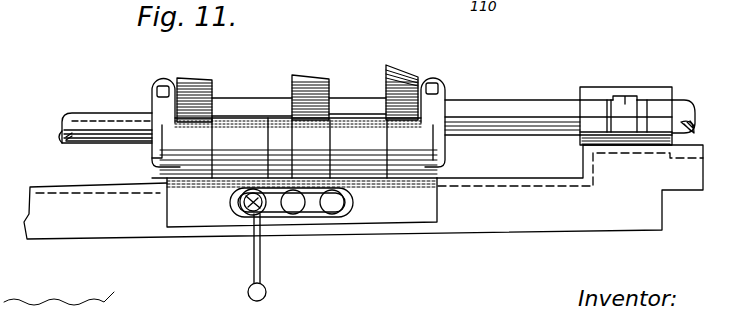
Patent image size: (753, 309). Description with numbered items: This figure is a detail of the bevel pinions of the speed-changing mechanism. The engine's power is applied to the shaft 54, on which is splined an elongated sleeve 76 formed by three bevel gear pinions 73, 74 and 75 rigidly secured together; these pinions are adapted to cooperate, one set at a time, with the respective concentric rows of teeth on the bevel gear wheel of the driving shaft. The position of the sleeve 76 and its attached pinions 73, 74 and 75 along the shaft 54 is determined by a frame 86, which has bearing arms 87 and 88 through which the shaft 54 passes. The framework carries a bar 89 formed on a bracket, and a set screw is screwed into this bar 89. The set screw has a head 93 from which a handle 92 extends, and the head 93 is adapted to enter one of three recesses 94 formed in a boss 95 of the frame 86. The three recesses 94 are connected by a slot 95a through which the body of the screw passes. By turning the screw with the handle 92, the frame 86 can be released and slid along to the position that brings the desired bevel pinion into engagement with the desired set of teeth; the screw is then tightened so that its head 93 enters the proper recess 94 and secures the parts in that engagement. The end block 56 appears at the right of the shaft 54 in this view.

The shaft 54 is at (91, 116).
The end block 56 is at (627, 96).
The bevel gear pinion 73 is at (193, 92).
The bevel gear pinion 74 is at (303, 74).
The bevel gear pinion 75 is at (408, 70).
The elongated sleeve 76 is at (340, 107).
The frame 86 is at (362, 133).
The bearing arm 87 is at (157, 104).
The bearing arm 88 is at (446, 99).
The bar 89 is at (497, 220).
The handle 92 is at (247, 290).
The head 93 is at (243, 213).
The recess 94 is at (293, 214).
The boss 95 is at (351, 213).
The slot 95a is at (280, 205).